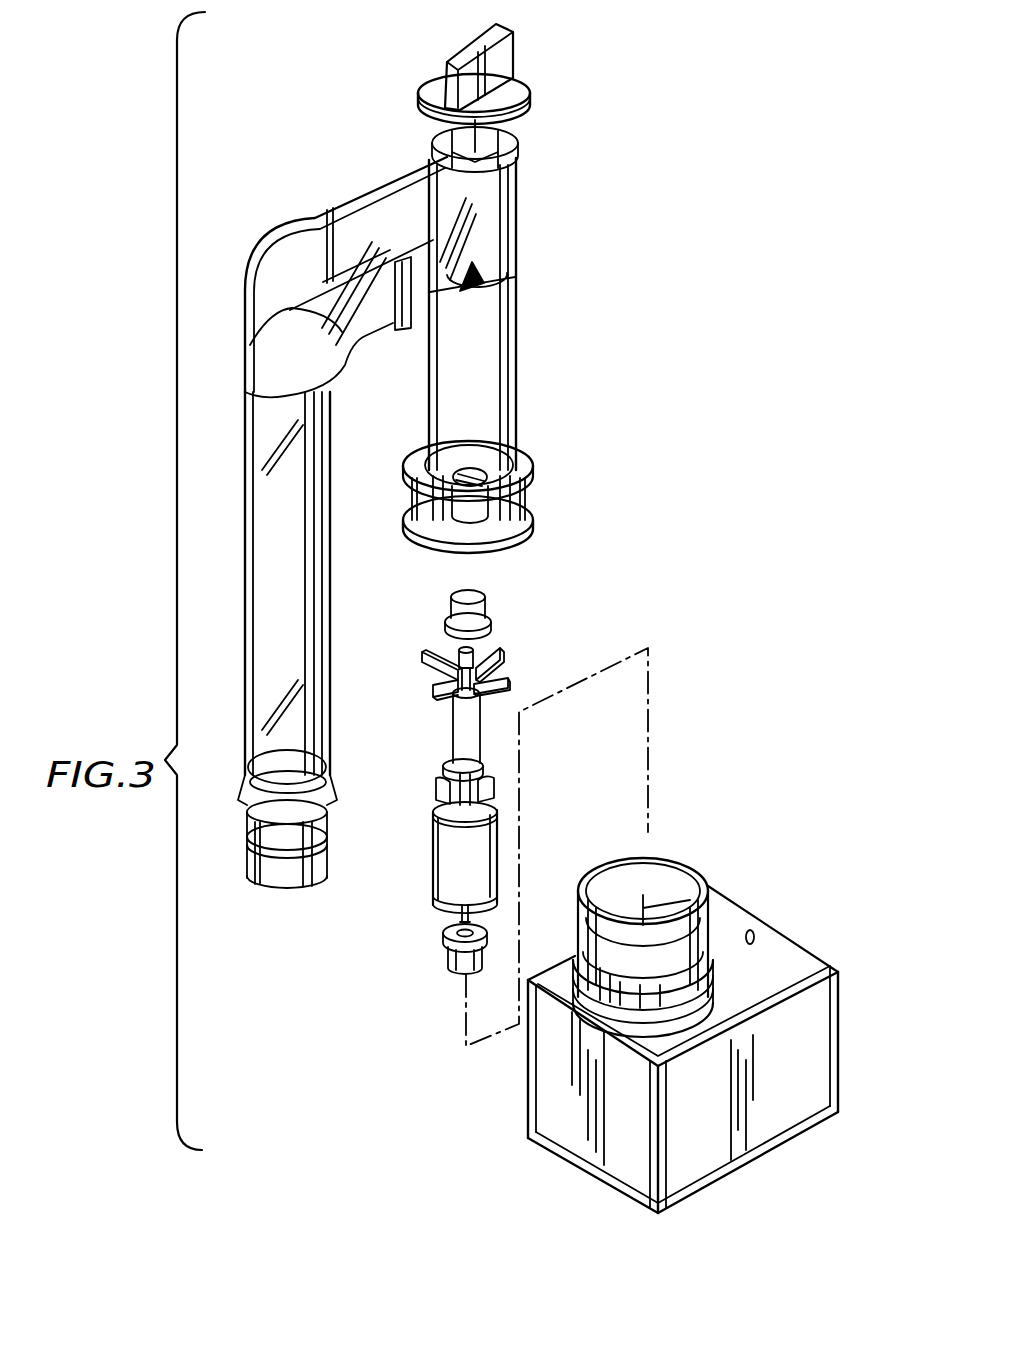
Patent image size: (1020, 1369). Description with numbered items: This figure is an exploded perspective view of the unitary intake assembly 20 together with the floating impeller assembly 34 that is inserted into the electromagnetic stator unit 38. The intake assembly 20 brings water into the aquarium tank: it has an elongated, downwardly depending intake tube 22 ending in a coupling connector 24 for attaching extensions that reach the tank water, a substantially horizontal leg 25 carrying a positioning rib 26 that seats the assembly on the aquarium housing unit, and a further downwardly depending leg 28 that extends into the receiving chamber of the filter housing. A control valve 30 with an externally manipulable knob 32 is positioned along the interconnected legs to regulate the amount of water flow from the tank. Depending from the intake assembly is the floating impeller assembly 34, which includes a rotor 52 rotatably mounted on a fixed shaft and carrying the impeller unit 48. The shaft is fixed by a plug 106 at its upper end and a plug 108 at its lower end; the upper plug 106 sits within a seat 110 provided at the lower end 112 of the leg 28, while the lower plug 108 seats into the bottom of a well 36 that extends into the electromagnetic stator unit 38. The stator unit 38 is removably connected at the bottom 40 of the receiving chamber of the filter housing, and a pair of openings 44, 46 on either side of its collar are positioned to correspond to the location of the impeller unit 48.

The unitary intake assembly 20 is at (391, 469).
The intake tube 22 is at (256, 630).
The coupling connector 24 is at (244, 862).
The horizontal leg 25 is at (287, 248).
The positioning rib 26 is at (404, 330).
The leg 28 is at (516, 366).
The control valve 30 is at (525, 118).
The knob 32 is at (515, 48).
The floating impeller assembly 34 is at (426, 849).
The well 36 is at (583, 1027).
The electromagnetic stator unit 38 is at (683, 1058).
The bottom 40 is at (708, 925).
The opening 44 is at (667, 910).
The opening 46 is at (625, 1030).
The impeller unit 48 is at (458, 723).
The rotor 52 is at (437, 862).
The plug 106 is at (490, 611).
The plug 108 is at (445, 958).
The seat 110 is at (483, 474).
The lower end 112 is at (519, 483).